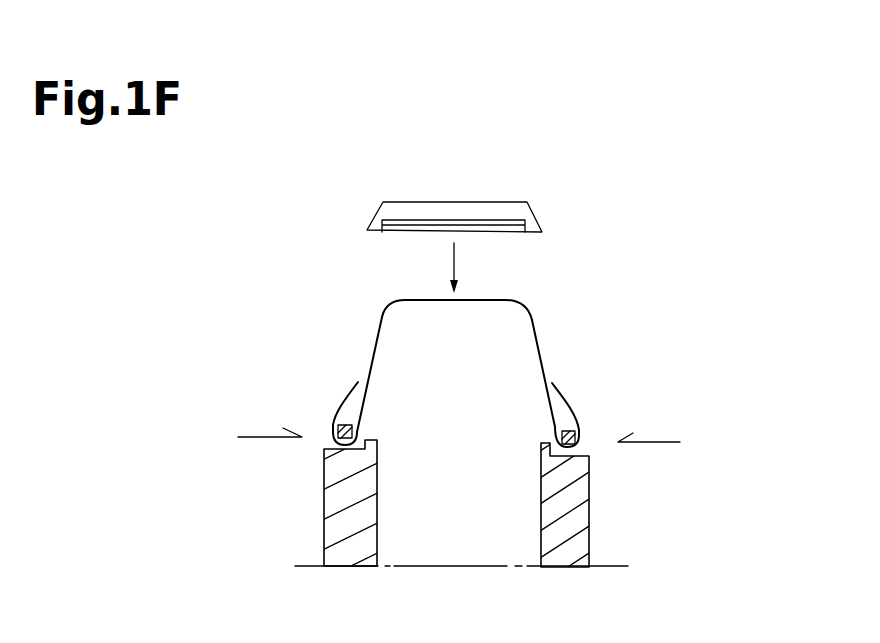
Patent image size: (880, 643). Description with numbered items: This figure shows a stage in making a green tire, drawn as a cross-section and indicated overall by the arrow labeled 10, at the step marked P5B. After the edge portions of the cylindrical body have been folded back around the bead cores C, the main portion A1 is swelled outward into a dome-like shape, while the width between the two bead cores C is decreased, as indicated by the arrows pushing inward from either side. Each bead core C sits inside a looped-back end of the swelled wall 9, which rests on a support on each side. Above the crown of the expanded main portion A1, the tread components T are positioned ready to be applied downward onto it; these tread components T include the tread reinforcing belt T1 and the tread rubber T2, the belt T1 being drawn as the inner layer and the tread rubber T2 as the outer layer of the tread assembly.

The lamp assembly 10 is at (578, 230).
The metal shell / dome member 9 is at (540, 343).
The main portion A1 is at (530, 310).
The bead core C is at (340, 426).
The tread components T is at (573, 88).
The tread reinforcing belt T1 is at (498, 232).
The tread rubber T2 is at (473, 210).
The process step P5B is at (306, 295).